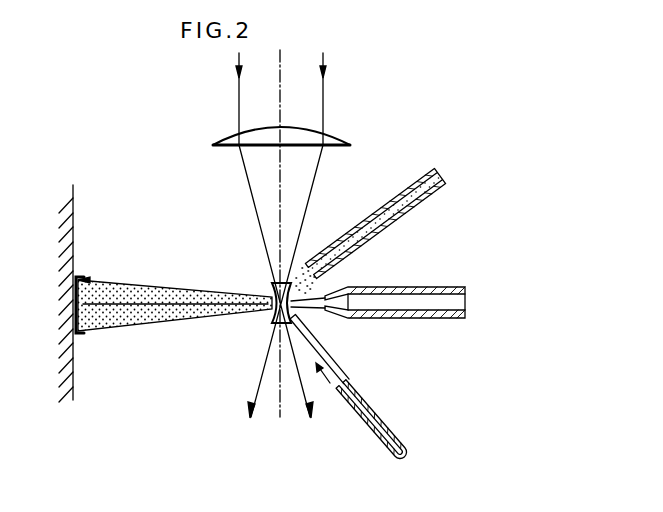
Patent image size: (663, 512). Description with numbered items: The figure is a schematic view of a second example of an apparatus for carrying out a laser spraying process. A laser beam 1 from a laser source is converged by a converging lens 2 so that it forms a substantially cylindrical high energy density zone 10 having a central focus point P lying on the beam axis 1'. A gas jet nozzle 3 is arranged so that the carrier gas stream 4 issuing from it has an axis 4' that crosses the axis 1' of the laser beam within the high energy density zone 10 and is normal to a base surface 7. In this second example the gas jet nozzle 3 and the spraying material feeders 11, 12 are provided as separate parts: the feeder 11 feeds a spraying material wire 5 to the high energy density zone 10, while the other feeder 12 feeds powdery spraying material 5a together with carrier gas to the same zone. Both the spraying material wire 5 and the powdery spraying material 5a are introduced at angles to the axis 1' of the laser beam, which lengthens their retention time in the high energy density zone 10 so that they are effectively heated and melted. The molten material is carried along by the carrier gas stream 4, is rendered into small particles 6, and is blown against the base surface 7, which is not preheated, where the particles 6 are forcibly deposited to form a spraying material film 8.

The laser beam 1 is at (304, 99).
The converging lens 2 is at (328, 136).
The beam axis 1' is at (273, 281).
The central focus point P is at (268, 295).
The high energy density zone 10 is at (270, 318).
The gas jet nozzle 3 is at (412, 287).
The spraying material feeder 12 is at (396, 192).
The powdery spraying material 5a is at (303, 267).
The spraying material wire 5 is at (338, 374).
The spraying material feeder 11 is at (375, 410).
The small particles 6 is at (122, 290).
The carrier gas stream 4 is at (175, 274).
The axis of carrier gas stream 4' is at (175, 341).
The spraying material film 8 is at (83, 322).
The base surface 7 is at (76, 223).